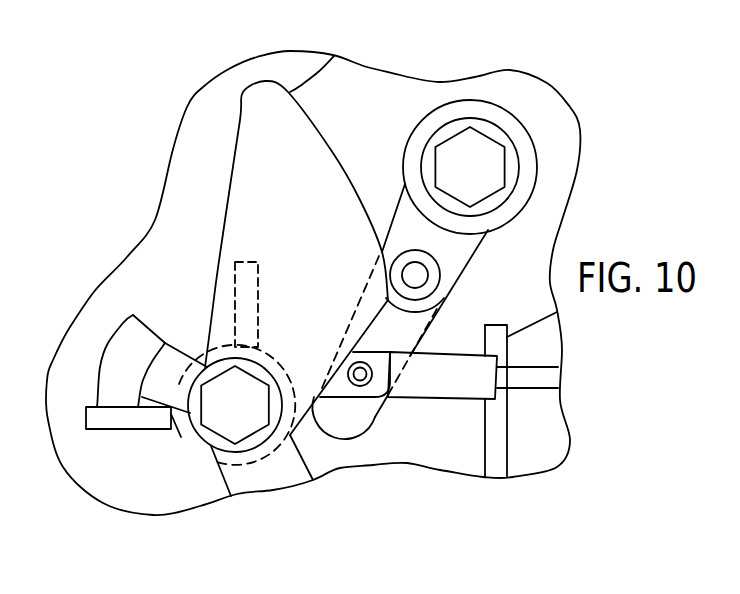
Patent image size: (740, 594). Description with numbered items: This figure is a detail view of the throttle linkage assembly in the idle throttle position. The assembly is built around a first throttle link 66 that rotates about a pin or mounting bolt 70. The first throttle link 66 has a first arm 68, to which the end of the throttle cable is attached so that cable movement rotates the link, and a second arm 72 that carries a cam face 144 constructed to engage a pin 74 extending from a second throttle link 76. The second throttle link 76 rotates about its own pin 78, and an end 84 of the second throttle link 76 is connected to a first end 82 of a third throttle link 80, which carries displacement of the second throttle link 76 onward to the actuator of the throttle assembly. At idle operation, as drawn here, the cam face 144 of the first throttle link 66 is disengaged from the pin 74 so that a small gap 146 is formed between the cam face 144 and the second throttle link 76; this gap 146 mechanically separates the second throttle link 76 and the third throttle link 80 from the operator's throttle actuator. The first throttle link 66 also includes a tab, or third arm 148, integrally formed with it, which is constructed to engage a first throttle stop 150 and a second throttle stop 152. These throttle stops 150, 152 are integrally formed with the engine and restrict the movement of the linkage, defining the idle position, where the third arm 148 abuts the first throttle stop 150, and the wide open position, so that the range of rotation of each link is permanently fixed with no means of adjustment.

The first throttle link 66 is at (335, 283).
The first arm 68 is at (228, 483).
The pin or mounting bolt 70 is at (227, 420).
The second arm 72 is at (267, 233).
The pin 74 is at (423, 278).
The second throttle link 76 is at (410, 227).
The pin 78 is at (480, 162).
The third throttle link 80 is at (522, 393).
The first end 82 is at (417, 377).
The end 84 is at (350, 437).
The cam face 144 is at (334, 56).
The gap 146 is at (394, 307).
The third arm 148 is at (117, 357).
The first throttle stop 150 is at (86, 418).
The second throttle stop 152 is at (233, 305).